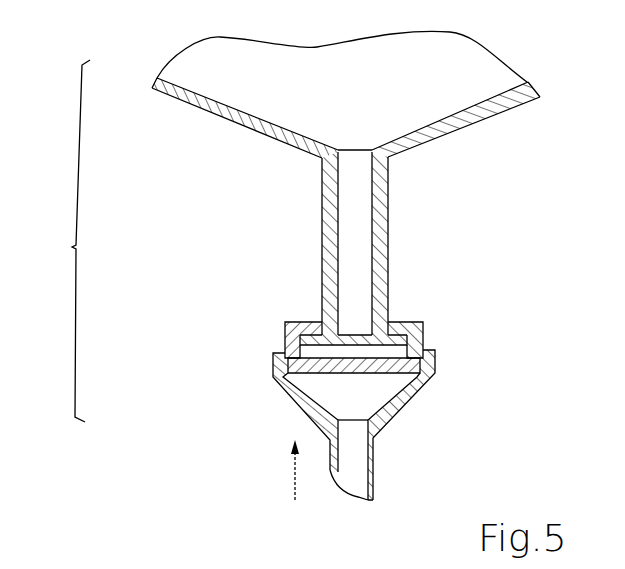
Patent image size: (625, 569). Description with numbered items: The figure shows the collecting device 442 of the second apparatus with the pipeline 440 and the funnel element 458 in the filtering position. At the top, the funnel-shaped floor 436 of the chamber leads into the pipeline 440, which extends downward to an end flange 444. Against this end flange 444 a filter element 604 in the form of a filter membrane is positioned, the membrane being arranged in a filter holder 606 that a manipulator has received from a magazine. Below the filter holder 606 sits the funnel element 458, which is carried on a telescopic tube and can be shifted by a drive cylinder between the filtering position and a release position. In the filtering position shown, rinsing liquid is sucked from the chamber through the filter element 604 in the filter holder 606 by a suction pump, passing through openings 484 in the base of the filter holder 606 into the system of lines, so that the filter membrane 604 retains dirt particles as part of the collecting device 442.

The funnel-shaped floor 436 is at (505, 85).
The pipeline 440 is at (390, 207).
The collecting device 442 is at (56, 241).
The end flange 444 is at (313, 322).
The funnel element 458 is at (405, 398).
The openings 484 is at (385, 350).
The filter element 604 is at (298, 345).
The filter holder 606 is at (423, 332).